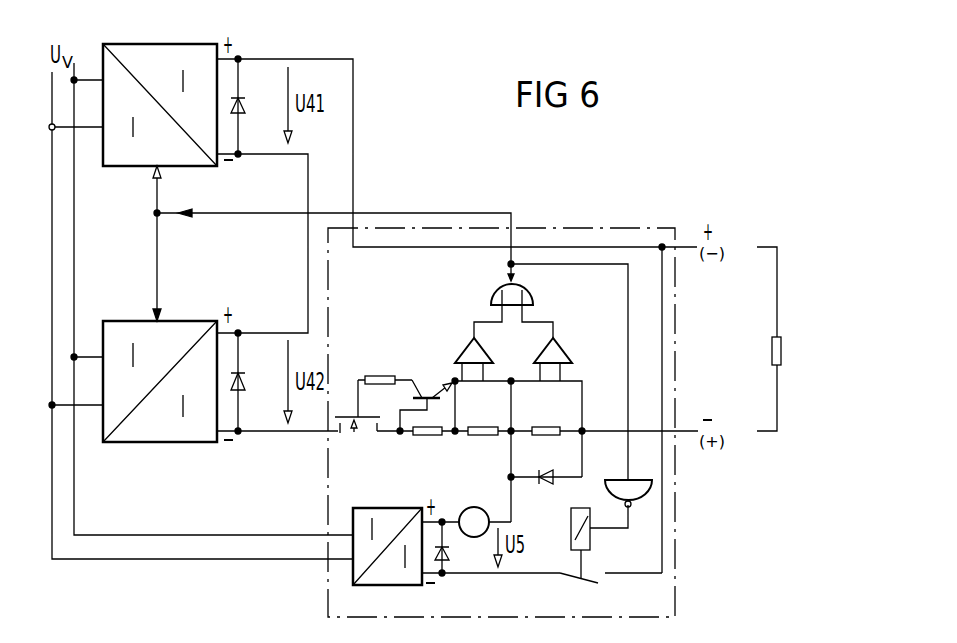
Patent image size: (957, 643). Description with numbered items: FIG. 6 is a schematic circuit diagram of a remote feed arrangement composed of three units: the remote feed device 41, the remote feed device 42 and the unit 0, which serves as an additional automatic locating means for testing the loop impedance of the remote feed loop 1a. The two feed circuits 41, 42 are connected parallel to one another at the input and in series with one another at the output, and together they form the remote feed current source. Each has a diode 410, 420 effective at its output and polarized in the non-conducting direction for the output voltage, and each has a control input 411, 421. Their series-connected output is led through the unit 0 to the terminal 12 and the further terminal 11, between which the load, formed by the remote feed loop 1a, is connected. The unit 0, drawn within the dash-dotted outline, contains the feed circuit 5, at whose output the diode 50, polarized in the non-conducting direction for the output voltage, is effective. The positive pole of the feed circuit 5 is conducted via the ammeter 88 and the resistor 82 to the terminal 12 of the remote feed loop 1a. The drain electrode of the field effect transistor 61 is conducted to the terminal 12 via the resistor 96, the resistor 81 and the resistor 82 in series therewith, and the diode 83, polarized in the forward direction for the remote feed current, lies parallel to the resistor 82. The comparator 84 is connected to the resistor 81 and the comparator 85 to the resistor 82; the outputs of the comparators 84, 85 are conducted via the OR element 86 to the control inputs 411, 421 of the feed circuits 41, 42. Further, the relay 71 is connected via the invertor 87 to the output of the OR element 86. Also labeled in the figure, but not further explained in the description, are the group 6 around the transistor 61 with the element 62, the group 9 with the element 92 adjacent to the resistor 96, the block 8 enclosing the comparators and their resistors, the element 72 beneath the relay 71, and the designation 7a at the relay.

The unit 0 is at (612, 228).
The first output terminal 11 is at (756, 287).
The terminal 12 is at (756, 407).
The remote feed loop 1a is at (764, 353).
The feed circuit 41 is at (160, 121).
The diode 410 is at (255, 106).
The control input 411 is at (174, 189).
The feed circuit 42 is at (160, 367).
The diode 420 is at (254, 382).
The control input 421 is at (175, 267).
The feed circuit 5 is at (387, 533).
The diode 50 is at (453, 548).
The control circuit 6 is at (382, 330).
The field effect transistor 61 is at (357, 425).
The resistor 62 is at (385, 367).
The transistor stage 9 is at (426, 330).
The transistor 92 is at (426, 390).
The resistor 96 is at (427, 450).
The amplifier block 8 is at (597, 312).
The resistor 81 is at (483, 416).
The resistor 82 is at (546, 416).
The diode 83 is at (546, 465).
The comparator 84 is at (484, 359).
The comparator 85 is at (562, 359).
The OR element 86 is at (508, 311).
The invertor 87 is at (626, 477).
The ammeter 88 is at (474, 510).
The relay 7a is at (560, 546).
The relay 71 is at (599, 542).
The relay contact 72 is at (579, 592).